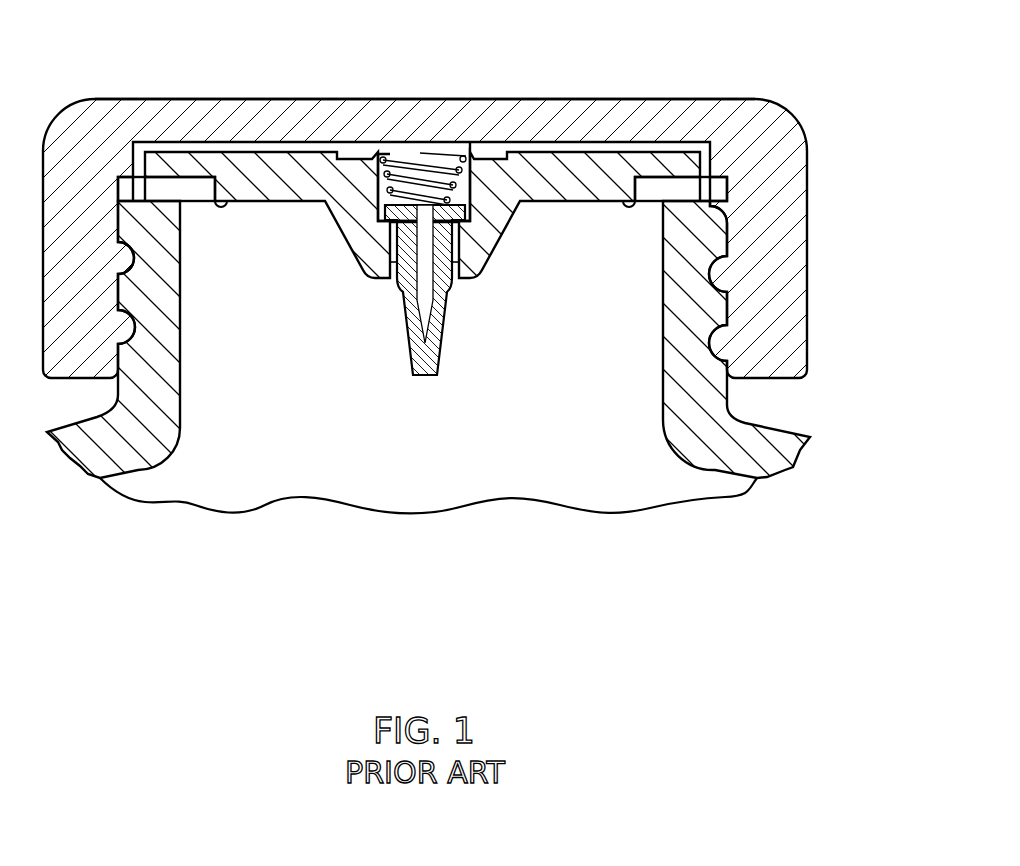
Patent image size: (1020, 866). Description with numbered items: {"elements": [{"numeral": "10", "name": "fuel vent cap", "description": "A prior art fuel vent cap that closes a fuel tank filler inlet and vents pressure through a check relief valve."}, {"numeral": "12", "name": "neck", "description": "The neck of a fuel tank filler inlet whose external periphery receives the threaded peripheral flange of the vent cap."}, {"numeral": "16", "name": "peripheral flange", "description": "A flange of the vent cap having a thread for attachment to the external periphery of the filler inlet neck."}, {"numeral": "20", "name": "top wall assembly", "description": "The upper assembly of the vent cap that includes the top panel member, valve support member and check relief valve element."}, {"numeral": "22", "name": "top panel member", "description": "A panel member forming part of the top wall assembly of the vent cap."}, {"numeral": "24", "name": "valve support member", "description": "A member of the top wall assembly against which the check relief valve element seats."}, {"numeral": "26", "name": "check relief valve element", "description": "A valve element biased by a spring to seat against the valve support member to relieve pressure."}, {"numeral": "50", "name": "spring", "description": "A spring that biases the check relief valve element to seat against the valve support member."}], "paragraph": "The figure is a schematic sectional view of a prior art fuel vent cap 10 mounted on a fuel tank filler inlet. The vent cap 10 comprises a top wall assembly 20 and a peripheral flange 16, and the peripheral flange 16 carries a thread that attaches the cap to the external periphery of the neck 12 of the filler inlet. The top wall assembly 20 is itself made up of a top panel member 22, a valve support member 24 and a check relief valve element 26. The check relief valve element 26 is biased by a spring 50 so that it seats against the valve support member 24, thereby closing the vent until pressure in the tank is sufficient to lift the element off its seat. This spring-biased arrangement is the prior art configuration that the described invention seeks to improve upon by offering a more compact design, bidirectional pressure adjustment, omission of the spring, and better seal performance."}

The closure assembly 10 is at (463, 260).
The container neck 12 is at (677, 333).
The cap shell 16 is at (808, 258).
The closure 20 is at (463, 213).
The top panel 22 is at (545, 125).
The insert plate 24 is at (590, 182).
The pin 26 is at (453, 282).
The spring housing 50 is at (400, 160).